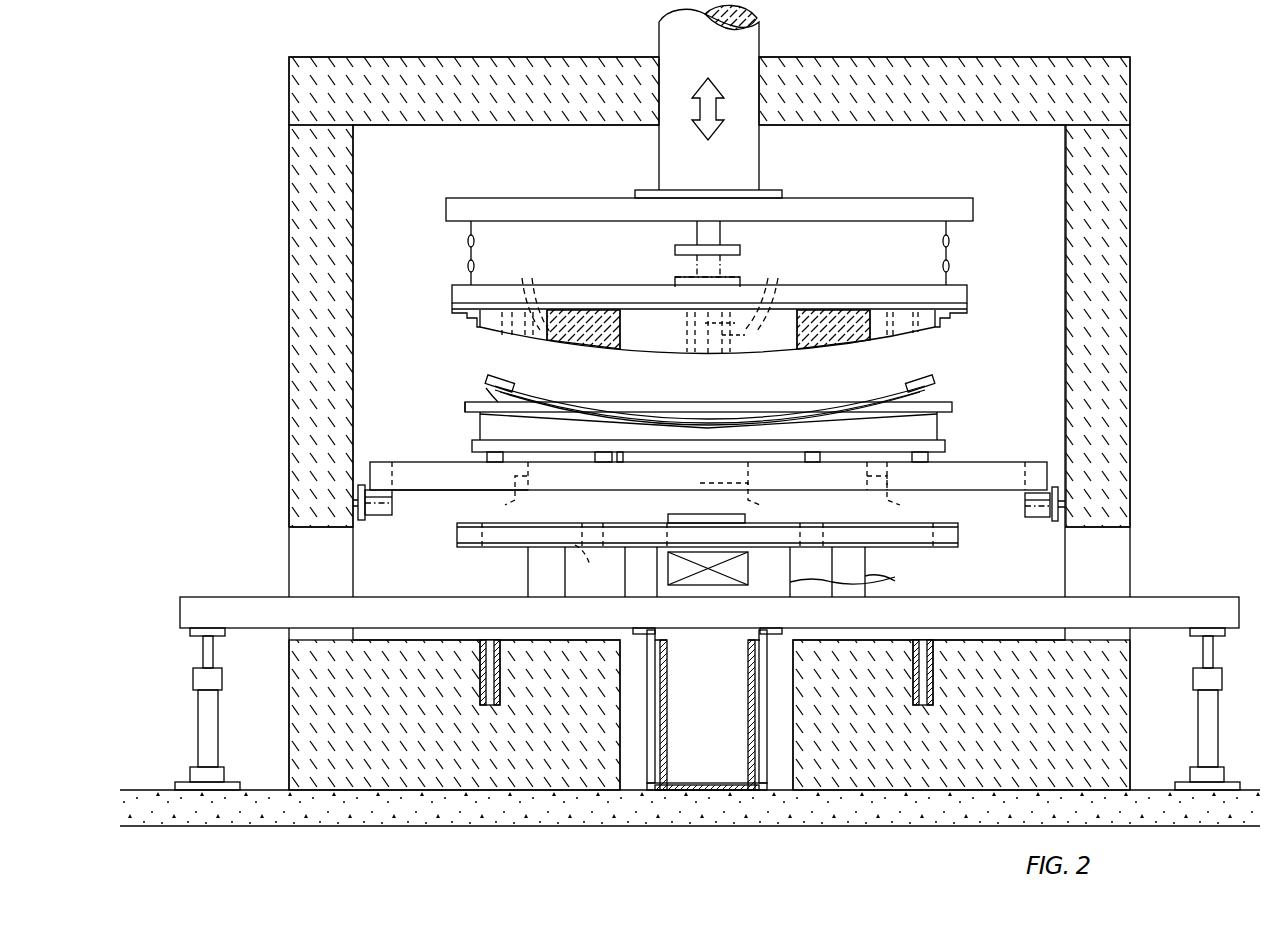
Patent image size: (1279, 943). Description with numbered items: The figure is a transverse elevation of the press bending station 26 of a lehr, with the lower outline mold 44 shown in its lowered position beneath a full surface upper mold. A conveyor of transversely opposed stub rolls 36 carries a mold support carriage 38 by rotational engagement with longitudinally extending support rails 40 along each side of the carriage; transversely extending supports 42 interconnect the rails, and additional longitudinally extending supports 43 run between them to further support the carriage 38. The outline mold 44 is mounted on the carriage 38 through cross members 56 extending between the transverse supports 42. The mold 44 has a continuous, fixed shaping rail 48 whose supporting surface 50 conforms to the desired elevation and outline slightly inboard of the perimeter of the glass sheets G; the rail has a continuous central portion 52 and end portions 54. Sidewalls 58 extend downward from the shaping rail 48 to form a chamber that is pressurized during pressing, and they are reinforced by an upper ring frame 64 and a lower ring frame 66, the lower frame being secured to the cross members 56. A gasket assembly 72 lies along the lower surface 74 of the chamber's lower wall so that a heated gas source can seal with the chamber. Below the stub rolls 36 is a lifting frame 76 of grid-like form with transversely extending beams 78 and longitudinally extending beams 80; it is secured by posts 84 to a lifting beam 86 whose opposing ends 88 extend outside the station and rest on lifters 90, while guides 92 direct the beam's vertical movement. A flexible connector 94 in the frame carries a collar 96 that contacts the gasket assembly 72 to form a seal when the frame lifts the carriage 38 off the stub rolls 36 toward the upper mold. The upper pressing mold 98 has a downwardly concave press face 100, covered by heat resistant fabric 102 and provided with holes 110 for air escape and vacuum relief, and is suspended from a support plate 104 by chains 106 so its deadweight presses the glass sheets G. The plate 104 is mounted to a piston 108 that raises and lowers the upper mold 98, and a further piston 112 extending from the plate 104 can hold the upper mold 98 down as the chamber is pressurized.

The press bending station 26 is at (232, 124).
The stub rolls 36 is at (378, 515).
The mold support carriage 38 is at (978, 462).
The support rails 40 is at (383, 462).
The transversely extending supports 42 is at (410, 490).
The longitudinally extending supports 43 is at (912, 505).
The outline mold 44 is at (948, 380).
The shaping rail 48 is at (476, 402).
The supporting surface 50 is at (522, 392).
The central portion 52 is at (690, 406).
The end portions 54 is at (502, 384).
The cross members 56 is at (597, 458).
The sidewalls 58 is at (938, 430).
The upper ring frame 64 is at (465, 406).
The lower ring frame 66 is at (476, 441).
The gasket assembly 72 is at (749, 502).
The lower surface 74 is at (622, 462).
The lifting frame 76 is at (448, 563).
The transversely extending beams 78 is at (510, 548).
The longitudinally extending beams 80 is at (975, 537).
The posts 84 is at (727, 572).
The lifting beam 86 is at (950, 598).
The opposing ends 88 is at (198, 597).
The lifters 90 is at (198, 732).
The guides 92 is at (647, 730).
The flexible connector 94 is at (732, 587).
The collar 96 is at (700, 514).
The upper pressing mold 98 is at (452, 296).
The press face 100 is at (688, 353).
The heat resistant fabric 102 is at (790, 336).
The support plate 104 is at (945, 198).
The chains 106 is at (467, 241).
The piston 108 is at (658, 149).
The holes 110 is at (644, 290).
The piston 112 is at (690, 232).
The glass sheets G is at (492, 392).